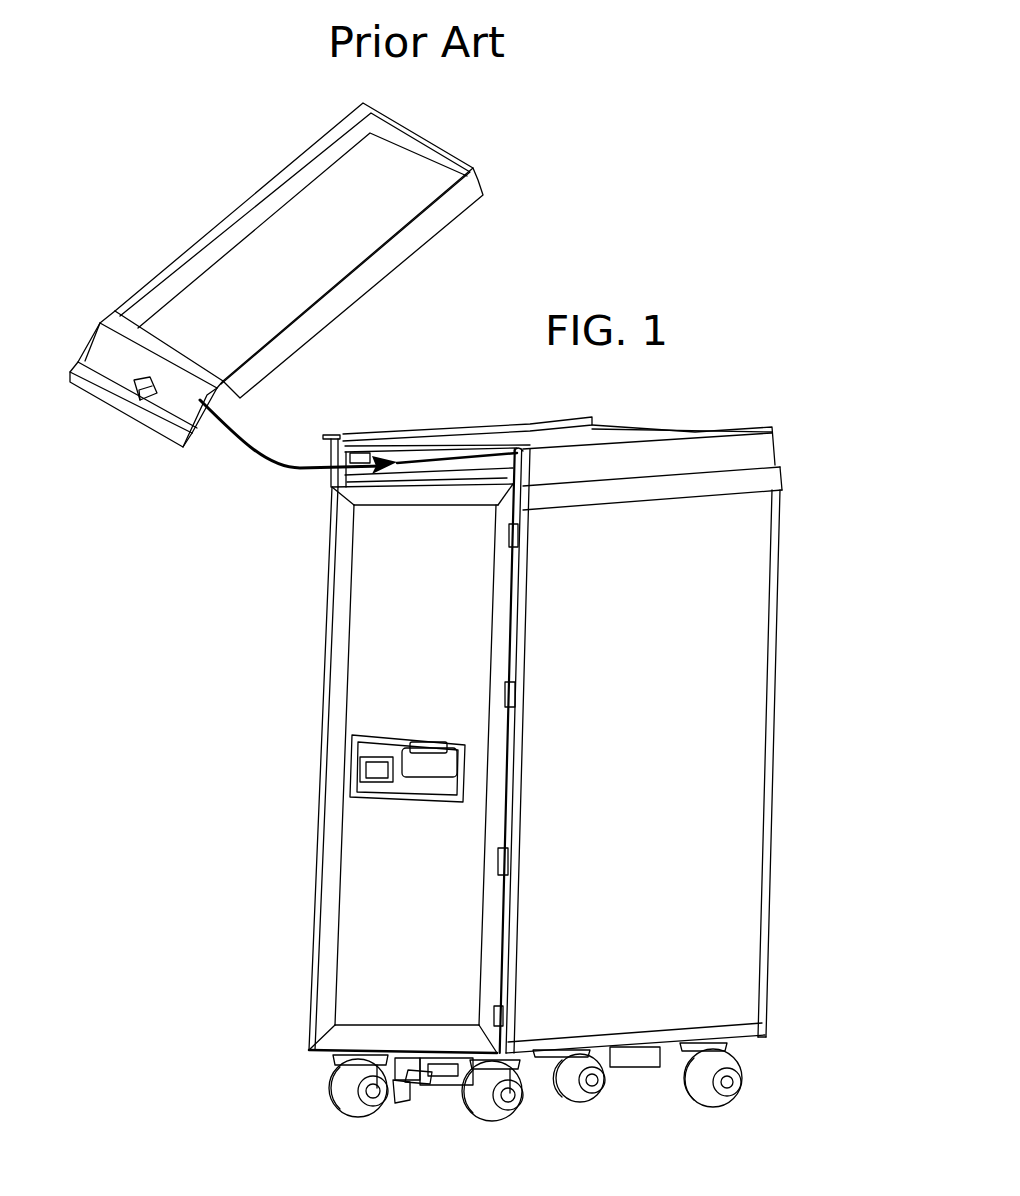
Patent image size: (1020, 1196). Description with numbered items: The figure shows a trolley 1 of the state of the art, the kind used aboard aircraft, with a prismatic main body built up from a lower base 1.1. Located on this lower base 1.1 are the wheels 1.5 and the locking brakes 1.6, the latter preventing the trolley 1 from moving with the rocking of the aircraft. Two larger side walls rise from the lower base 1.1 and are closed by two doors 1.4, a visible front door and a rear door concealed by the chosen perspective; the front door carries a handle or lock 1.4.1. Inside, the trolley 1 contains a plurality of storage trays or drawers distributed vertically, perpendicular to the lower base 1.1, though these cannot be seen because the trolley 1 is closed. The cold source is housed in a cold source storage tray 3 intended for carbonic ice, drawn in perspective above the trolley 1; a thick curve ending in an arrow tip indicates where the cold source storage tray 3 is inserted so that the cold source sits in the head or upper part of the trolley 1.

The trolley 1 is at (444, 778).
The lower base 1.1 is at (535, 1057).
The door 1.4 is at (407, 642).
The door handle / lock 1.4.1 is at (410, 783).
The wheel 1.5 is at (400, 1097).
The locking brake 1.6 is at (333, 1100).
The cold source storage tray 3 is at (207, 315).